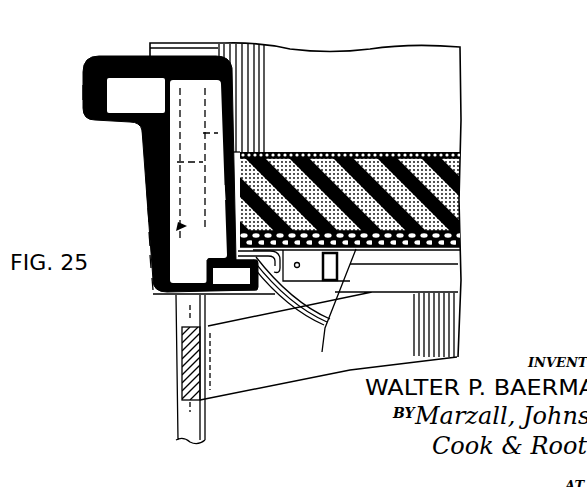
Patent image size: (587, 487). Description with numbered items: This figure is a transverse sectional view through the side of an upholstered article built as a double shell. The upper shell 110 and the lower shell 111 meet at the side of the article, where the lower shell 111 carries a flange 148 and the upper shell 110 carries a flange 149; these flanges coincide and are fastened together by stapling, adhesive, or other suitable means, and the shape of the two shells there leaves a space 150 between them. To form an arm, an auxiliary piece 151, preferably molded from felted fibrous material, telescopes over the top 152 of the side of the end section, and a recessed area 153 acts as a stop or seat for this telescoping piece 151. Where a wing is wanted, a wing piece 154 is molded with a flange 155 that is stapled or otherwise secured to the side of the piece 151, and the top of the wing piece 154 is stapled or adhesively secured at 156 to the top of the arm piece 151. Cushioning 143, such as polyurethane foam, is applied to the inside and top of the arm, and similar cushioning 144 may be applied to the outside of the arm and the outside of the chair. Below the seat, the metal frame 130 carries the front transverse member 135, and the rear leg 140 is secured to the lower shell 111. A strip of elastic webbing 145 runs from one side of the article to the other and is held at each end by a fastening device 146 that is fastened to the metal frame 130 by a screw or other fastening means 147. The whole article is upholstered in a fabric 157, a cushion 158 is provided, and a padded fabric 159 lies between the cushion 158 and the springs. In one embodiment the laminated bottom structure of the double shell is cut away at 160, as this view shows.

The upper shell 110 is at (150, 181).
The lower shell 111 is at (150, 261).
The metal frame 130 is at (235, 293).
The front transverse member 135 is at (393, 347).
The rear leg 140 is at (240, 127).
The cushioning 143 is at (233, 110).
The cushioning 144 is at (91, 113).
The elastic webbing 145 is at (460, 247).
The fastening device 146 is at (282, 275).
The fastening means 147 is at (228, 250).
The flange 148 is at (150, 212).
The flange 149 is at (150, 195).
The space 150 is at (150, 238).
The auxiliary piece 151 is at (238, 108).
The top of the side 152 is at (258, 147).
The recessed area 153 is at (224, 192).
The wing piece 154 is at (82, 92).
The flange 155 is at (144, 130).
The securing location 156 is at (221, 45).
The fabric 157 is at (152, 283).
The cushion 158 is at (380, 145).
The padded fabric 159 is at (460, 232).
The cut-away 160 is at (323, 324).